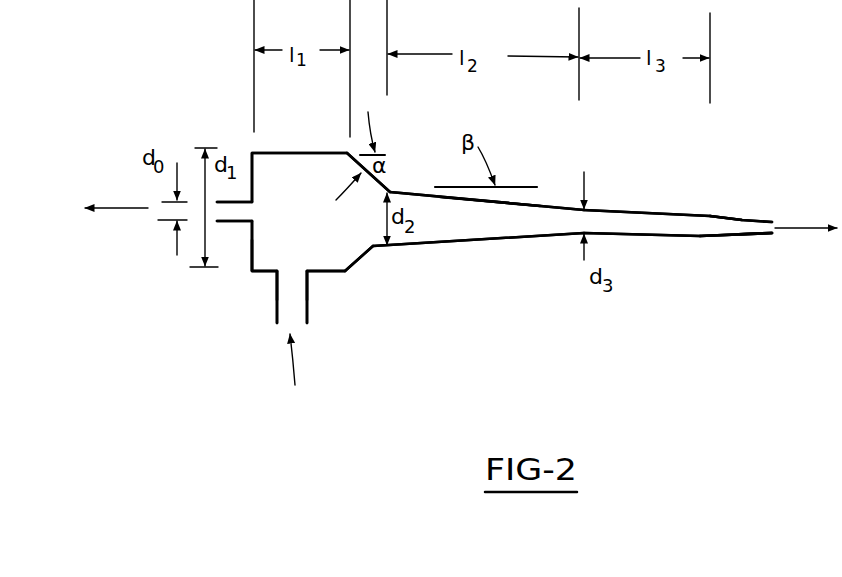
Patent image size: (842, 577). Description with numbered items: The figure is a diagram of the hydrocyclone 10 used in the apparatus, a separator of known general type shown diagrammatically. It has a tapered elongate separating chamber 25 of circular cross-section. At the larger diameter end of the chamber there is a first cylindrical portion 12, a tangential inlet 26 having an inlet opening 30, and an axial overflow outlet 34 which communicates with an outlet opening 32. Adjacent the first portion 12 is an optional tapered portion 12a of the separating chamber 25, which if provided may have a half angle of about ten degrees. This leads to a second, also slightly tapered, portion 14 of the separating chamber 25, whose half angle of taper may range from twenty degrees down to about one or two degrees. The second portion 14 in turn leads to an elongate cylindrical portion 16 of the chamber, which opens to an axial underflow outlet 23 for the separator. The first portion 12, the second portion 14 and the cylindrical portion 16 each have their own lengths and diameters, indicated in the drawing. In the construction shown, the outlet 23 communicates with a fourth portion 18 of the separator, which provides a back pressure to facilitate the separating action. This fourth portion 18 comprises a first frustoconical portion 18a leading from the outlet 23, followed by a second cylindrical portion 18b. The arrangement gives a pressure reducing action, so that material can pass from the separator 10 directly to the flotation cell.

The hydrocyclone 10 is at (493, 293).
The first cylindrical portion 12 is at (273, 152).
The tapered portion 12a is at (372, 250).
The second portion 14 is at (540, 208).
The elongate cylindrical portion 16 is at (637, 212).
The fourth portion 18 is at (748, 216).
The first frustoconical portion 18a is at (717, 237).
The second cylindrical portion 18b is at (760, 237).
The axial underflow outlet 23 is at (712, 217).
The separating chamber 25 is at (493, 200).
The tangential inlet 26 is at (308, 306).
The inlet opening 30 is at (292, 273).
The outlet opening 32 is at (248, 208).
The axial overflow outlet 34 is at (233, 223).